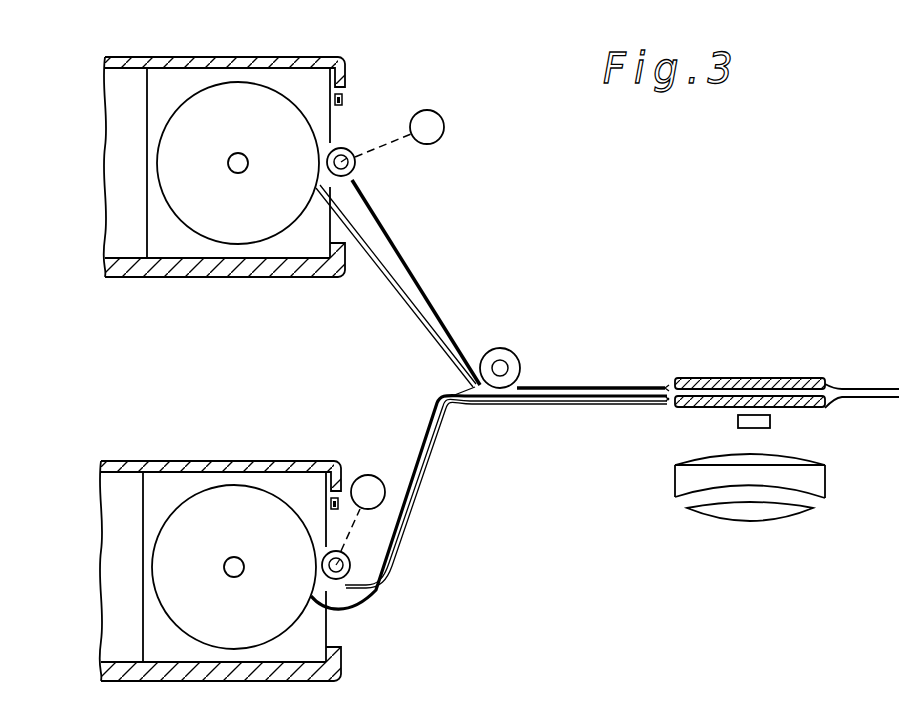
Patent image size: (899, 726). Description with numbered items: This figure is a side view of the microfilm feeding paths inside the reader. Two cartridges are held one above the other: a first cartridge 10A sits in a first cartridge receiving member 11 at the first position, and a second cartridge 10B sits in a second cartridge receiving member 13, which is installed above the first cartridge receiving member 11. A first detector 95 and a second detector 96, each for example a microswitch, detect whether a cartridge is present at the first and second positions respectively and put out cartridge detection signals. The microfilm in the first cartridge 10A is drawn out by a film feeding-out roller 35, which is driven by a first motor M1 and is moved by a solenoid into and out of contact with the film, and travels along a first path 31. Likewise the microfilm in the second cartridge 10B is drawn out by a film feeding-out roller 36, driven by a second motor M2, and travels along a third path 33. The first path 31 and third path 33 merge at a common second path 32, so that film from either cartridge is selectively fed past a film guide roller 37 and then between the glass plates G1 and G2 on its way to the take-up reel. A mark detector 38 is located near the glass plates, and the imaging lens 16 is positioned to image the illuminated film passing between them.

The second cartridge receiving member 13 is at (313, 57).
The second cartridge 10B is at (325, 124).
The second detector 96 is at (346, 95).
The film feeding-out roller 36 is at (355, 163).
The second motor M2 is at (399, 133).
The third path 33 is at (409, 281).
The film guide roller 37 is at (505, 353).
The second path 32 is at (597, 397).
The glass plate G2 is at (743, 378).
The glass plate G1 is at (800, 407).
The mark detector 38 is at (738, 421).
The imaging lens 16 is at (815, 484).
The first cartridge receiving member 11 is at (290, 462).
The first cartridge 10A is at (223, 478).
The first detector 95 is at (339, 498).
The film feeding-out roller 35 is at (349, 561).
The first motor M1 is at (363, 513).
The first path 31 is at (400, 524).